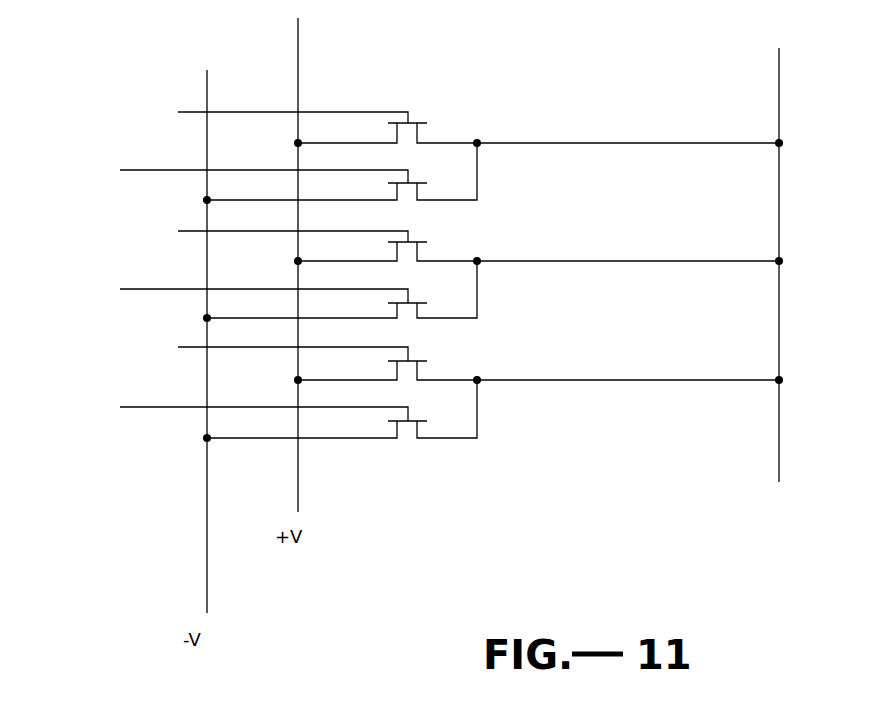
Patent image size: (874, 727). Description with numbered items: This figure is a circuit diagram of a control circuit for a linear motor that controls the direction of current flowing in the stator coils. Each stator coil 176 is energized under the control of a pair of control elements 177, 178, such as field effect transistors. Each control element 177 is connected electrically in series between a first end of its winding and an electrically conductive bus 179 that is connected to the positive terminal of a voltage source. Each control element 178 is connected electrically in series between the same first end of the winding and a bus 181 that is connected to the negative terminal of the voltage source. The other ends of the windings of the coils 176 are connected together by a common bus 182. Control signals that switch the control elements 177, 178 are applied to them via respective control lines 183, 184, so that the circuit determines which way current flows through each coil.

The stator coil 176 is at (619, 142).
The control element 177 is at (417, 122).
The control element 178 is at (412, 182).
The electrically conductive bus 179 is at (298, 475).
The bus 181 is at (207, 528).
The bus 182 is at (779, 321).
The control line 183 is at (181, 111).
The control line 184 is at (156, 169).